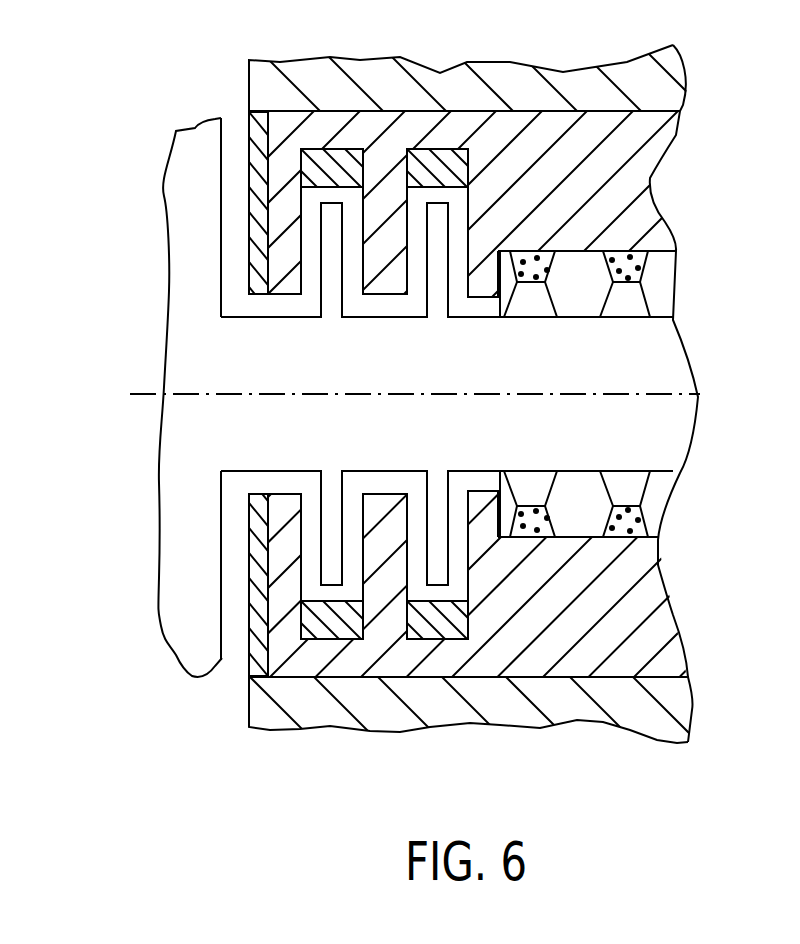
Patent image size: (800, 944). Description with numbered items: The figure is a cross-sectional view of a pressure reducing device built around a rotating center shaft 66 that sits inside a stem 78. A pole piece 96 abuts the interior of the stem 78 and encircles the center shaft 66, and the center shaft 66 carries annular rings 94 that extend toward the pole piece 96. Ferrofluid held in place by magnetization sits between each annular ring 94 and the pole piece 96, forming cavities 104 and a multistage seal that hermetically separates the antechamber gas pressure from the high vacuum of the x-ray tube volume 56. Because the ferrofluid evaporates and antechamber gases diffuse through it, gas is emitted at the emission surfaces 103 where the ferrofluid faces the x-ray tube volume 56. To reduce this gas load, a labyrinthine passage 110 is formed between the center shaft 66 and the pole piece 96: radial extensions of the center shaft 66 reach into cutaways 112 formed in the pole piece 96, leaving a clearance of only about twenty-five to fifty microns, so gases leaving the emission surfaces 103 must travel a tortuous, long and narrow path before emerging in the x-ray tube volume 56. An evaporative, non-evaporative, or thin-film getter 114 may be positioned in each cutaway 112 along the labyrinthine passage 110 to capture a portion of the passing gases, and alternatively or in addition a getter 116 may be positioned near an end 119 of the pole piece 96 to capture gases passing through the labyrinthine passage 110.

The x-ray tube volume 56 is at (133, 362).
The center shaft 66 is at (694, 420).
The stem 78 is at (502, 83).
The annular rings 94 is at (515, 302).
The pole piece 96 is at (633, 122).
The emission surfaces 103 is at (517, 284).
The cavities 104 is at (662, 306).
The labyrinthine passage 110 is at (317, 596).
The cutaways 112 is at (440, 193).
The getter 114 is at (333, 627).
The getter 116 is at (260, 640).
The end of pole piece 119 is at (226, 200).